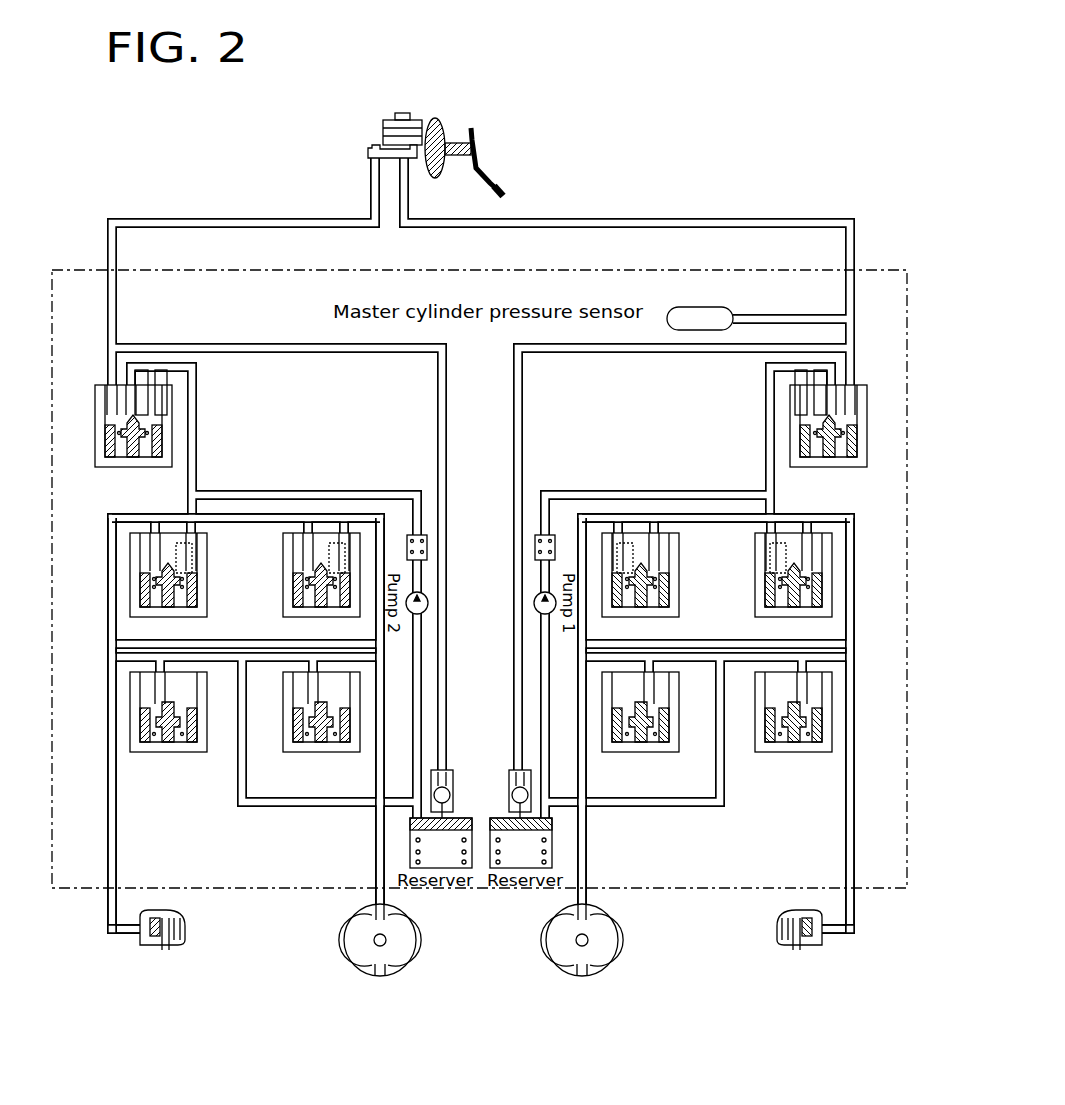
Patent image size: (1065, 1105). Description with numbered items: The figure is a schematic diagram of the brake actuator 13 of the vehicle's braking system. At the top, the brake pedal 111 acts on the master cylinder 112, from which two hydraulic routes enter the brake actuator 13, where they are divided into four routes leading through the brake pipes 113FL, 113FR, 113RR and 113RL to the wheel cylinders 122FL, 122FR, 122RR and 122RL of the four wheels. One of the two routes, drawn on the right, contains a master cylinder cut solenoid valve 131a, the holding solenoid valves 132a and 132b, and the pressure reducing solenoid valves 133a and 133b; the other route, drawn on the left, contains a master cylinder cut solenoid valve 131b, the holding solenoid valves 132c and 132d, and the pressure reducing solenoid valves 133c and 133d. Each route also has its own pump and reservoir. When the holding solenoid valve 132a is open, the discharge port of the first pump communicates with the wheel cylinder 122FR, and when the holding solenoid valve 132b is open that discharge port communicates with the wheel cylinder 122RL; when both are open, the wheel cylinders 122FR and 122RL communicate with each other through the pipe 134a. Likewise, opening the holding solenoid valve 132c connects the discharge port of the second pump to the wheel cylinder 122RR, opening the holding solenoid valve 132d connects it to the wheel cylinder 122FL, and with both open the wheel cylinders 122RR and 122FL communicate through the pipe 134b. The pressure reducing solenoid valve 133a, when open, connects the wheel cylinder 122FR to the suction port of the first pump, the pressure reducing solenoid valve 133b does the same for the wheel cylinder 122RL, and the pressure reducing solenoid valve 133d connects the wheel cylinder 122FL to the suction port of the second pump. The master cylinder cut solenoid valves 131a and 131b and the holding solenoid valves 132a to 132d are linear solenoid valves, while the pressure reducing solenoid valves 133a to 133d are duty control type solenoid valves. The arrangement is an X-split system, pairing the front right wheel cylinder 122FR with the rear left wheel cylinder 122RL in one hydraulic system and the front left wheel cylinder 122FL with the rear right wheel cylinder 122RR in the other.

The brake pedal 111 is at (500, 186).
The master cylinder 112 is at (372, 146).
The brake actuator 13 is at (878, 268).
The master cylinder cut solenoid valve 131a is at (790, 437).
The master cylinder cut solenoid valve 131b is at (172, 437).
The holding solenoid valve 132a is at (793, 588).
The holding solenoid valve 132b is at (640, 588).
The holding solenoid valve 132c is at (321, 588).
The holding solenoid valve 132d is at (168, 588).
The pressure reducing solenoid valve 133a is at (793, 726).
The pressure reducing solenoid valve 133b is at (640, 726).
The pressure reducing solenoid valve 133c is at (321, 726).
The pressure reducing solenoid valve 133d is at (168, 726).
The pipe 134a is at (712, 520).
The pipe 134b is at (240, 520).
The brake pipe 113FL is at (104, 924).
The brake pipe 113FR is at (856, 928).
The brake pipe 113RR is at (422, 893).
The brake pipe 113RL is at (578, 905).
The wheel cylinder 122FL is at (187, 928).
The wheel cylinder 122FR is at (773, 925).
The wheel cylinder 122RR is at (346, 942).
The wheel cylinder 122RL is at (617, 951).